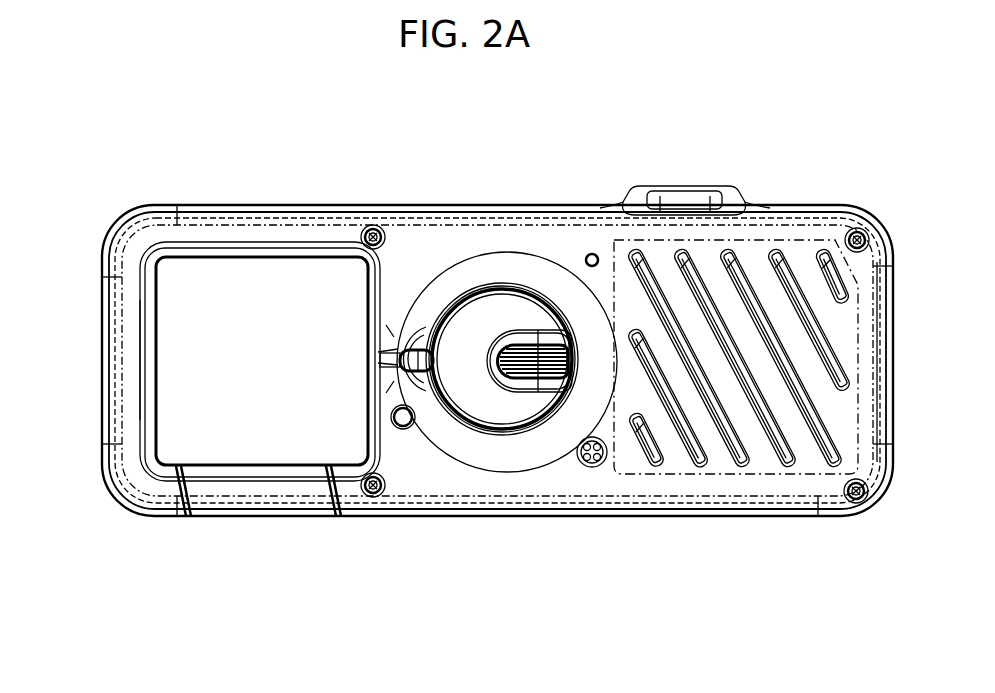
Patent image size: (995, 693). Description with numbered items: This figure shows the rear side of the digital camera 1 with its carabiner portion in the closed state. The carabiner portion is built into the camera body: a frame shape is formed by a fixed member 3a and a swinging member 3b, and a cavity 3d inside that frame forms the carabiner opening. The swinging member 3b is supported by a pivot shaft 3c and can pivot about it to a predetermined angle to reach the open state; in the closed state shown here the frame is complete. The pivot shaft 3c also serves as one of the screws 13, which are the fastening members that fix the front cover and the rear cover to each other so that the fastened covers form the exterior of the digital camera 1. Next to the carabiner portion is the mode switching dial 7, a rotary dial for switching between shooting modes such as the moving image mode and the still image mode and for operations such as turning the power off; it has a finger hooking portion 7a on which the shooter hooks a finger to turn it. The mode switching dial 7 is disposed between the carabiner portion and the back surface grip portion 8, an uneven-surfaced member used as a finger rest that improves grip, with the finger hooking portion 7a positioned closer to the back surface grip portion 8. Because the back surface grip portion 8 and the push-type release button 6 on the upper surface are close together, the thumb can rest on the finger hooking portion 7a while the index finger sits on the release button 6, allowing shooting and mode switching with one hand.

The digital camera 1 is at (199, 157).
The fixed member 3a is at (160, 381).
The swinging member 3b is at (233, 487).
The pivot shaft 3c is at (376, 492).
The cavity 3d is at (208, 305).
The release button 6 is at (678, 192).
The mode switching dial 7 is at (495, 310).
The finger hooking portion 7a is at (538, 342).
The back surface grip portion 8 is at (735, 267).
The screws 13 is at (374, 230).